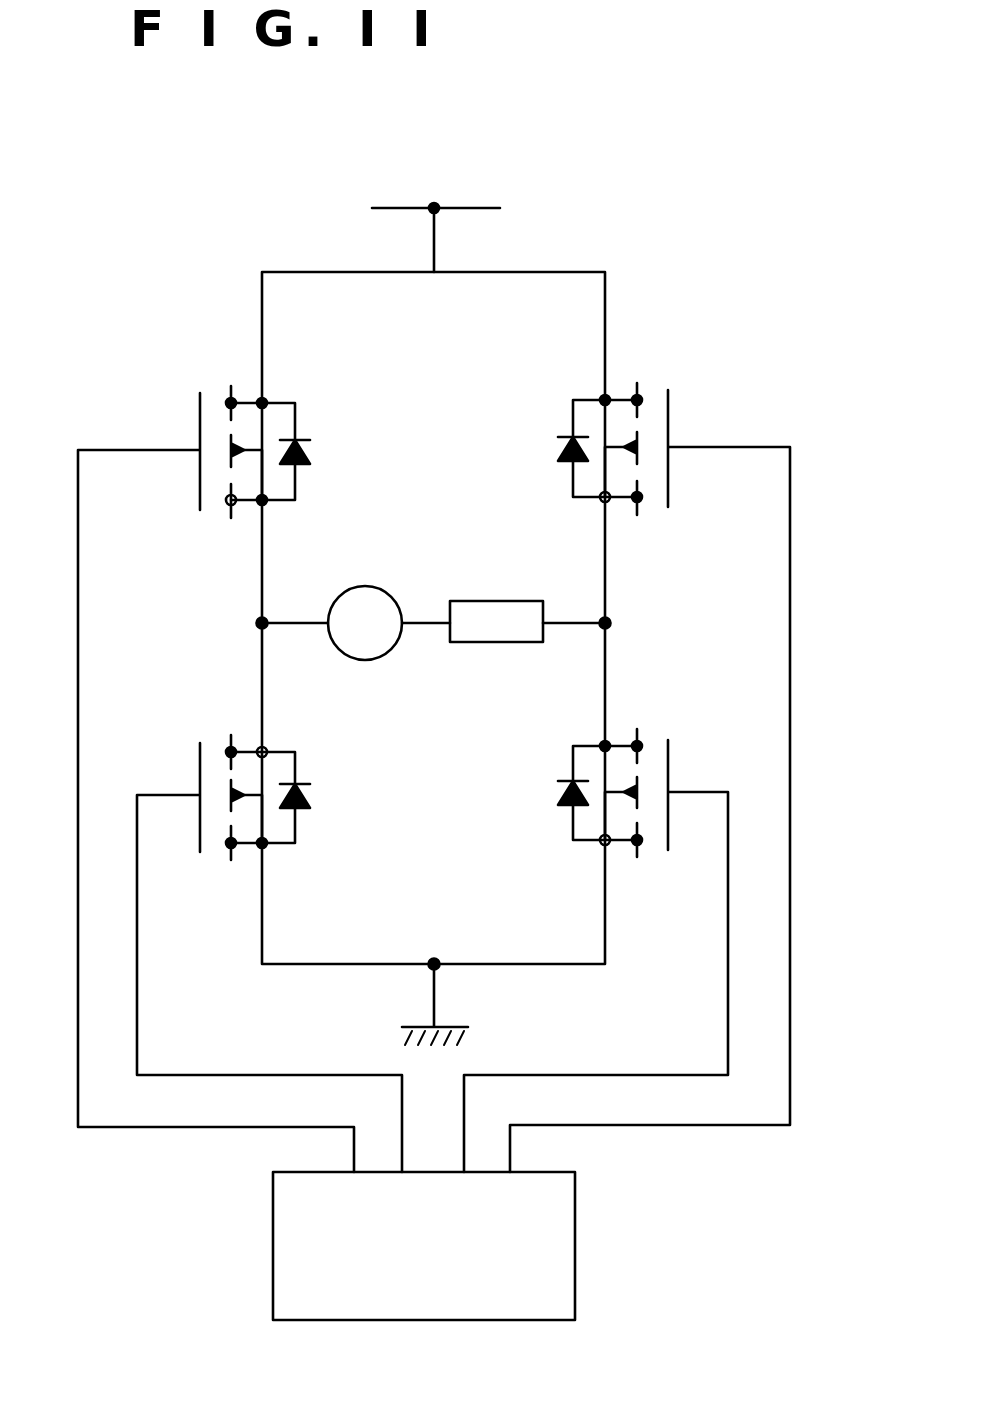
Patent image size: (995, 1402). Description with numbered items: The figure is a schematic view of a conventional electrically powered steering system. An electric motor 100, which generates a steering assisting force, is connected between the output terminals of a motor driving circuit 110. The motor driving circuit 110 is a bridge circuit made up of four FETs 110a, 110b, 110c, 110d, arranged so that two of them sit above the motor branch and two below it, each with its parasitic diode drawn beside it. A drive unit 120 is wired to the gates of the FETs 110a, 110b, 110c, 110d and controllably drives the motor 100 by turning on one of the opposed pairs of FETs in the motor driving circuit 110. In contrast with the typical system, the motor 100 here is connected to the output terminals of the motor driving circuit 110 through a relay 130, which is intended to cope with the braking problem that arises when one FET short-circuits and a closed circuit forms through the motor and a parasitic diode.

The motor driving circuit 110 is at (550, 293).
The FET 110a is at (215, 403).
The FET 110b is at (652, 398).
The FET 110c is at (215, 748).
The FET 110d is at (655, 740).
The electric motor 100 is at (365, 598).
The relay 130 is at (498, 632).
The drive unit 120 is at (553, 1219).